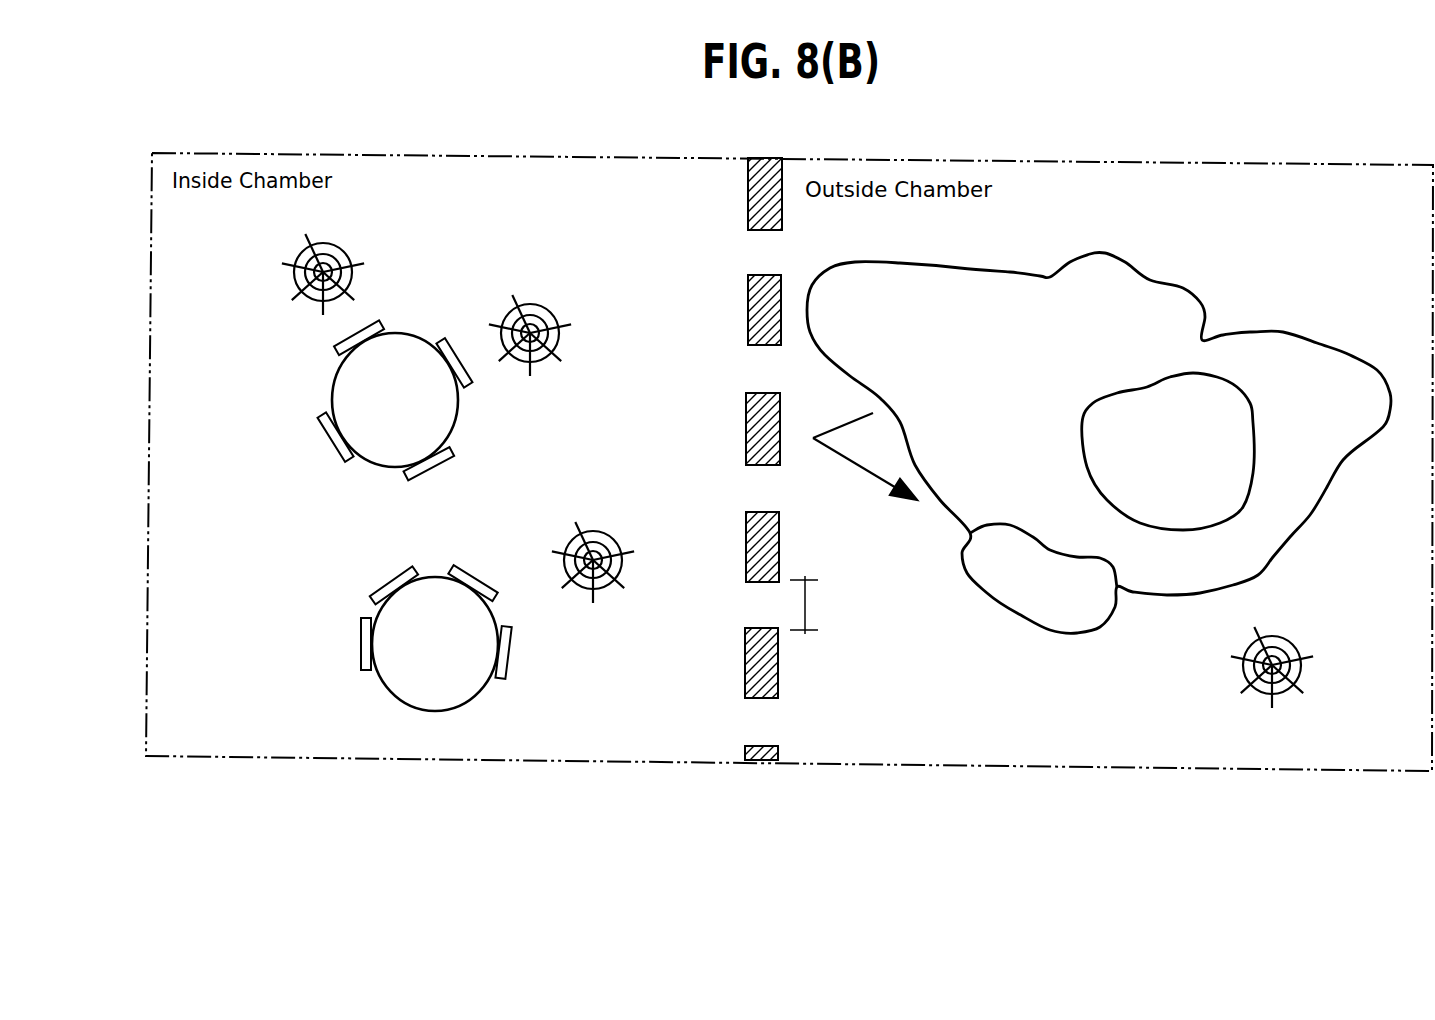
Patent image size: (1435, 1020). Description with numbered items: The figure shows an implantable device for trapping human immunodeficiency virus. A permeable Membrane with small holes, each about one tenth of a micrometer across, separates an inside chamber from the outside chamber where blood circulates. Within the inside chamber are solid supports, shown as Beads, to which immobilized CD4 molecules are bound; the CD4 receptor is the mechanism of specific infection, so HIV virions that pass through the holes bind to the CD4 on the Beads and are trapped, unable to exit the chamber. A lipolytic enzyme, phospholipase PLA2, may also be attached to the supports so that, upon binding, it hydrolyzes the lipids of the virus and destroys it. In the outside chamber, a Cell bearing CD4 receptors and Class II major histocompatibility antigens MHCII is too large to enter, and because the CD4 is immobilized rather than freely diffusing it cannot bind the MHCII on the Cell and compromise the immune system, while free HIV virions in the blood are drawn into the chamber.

The HIV virion HIV is at (1285, 635).
The CD4 molecule CD4 is at (338, 517).
The phospholipase A2 PLA2 is at (447, 642).
The supports Beads is at (472, 422).
The cell containing CD4 receptors Cell is at (1099, 442).
The Class II major histocompatibility antigen MHCII is at (1078, 446).
The permeable membrane Membrane is at (790, 684).